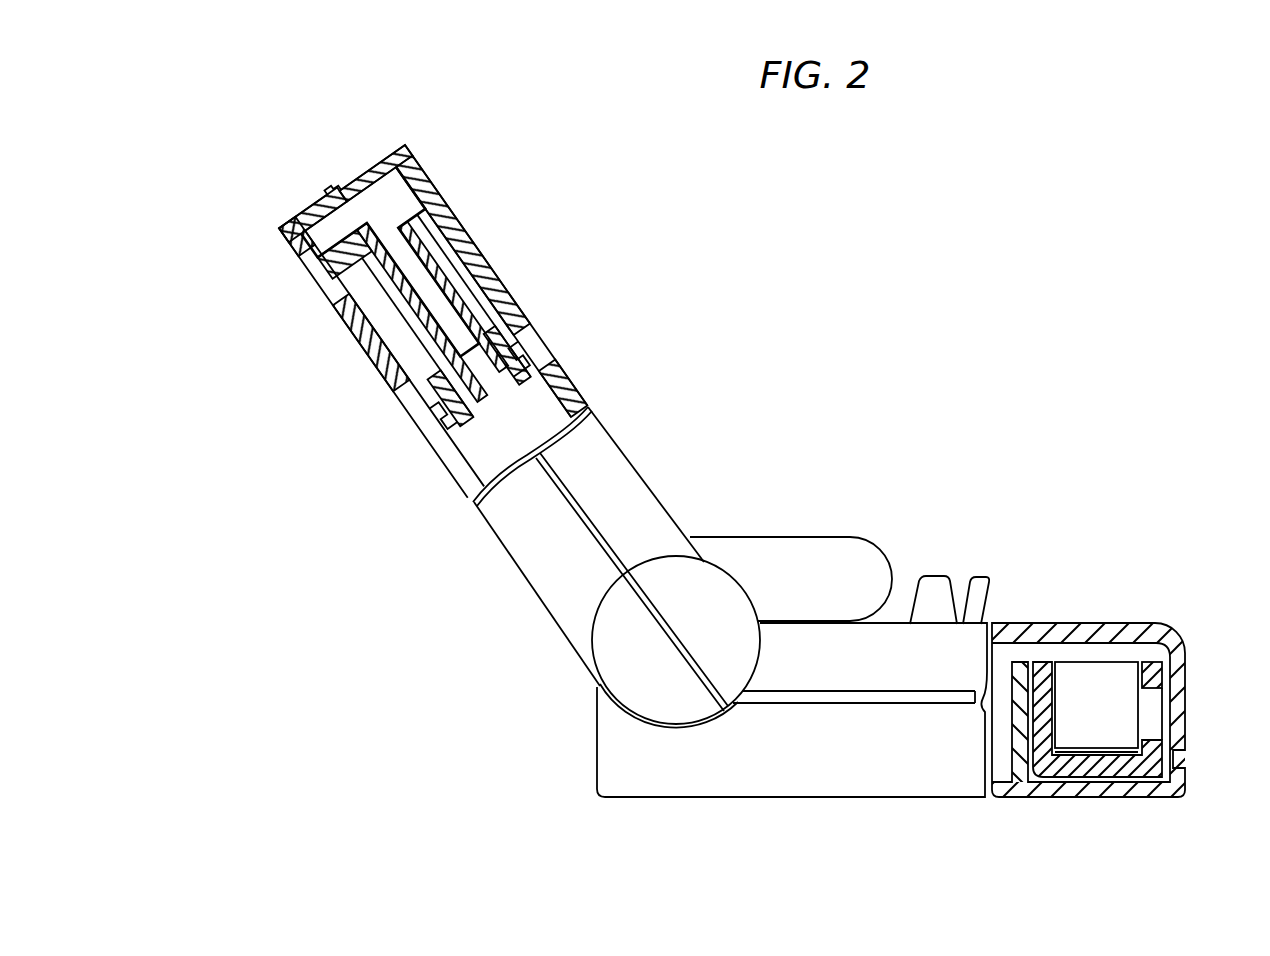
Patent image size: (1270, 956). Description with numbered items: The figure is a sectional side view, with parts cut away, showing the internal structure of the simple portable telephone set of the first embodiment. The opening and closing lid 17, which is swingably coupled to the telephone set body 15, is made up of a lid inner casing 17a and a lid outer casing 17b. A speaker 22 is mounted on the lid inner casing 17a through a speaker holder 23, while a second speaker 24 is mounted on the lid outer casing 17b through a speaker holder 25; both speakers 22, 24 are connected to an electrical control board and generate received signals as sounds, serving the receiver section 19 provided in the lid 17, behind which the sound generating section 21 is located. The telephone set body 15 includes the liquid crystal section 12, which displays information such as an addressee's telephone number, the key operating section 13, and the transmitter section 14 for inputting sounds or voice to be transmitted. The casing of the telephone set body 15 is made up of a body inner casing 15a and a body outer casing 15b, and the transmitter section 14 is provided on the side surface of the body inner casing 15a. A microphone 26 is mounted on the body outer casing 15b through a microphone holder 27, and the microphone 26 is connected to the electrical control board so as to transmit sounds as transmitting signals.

The liquid crystal section 12 is at (811, 552).
The key operating section 13 is at (934, 578).
The transmitter section 14 is at (1180, 713).
The telephone set body 15 is at (853, 778).
The body inner casing 15a is at (1127, 623).
The body outer casing 15b is at (1117, 794).
The opening and closing lid 17 is at (297, 197).
The lid inner casing 17a is at (403, 143).
The lid outer casing 17b is at (280, 230).
The receiver section 19 is at (481, 263).
The sound generating section 21 is at (362, 353).
The speaker 22 is at (436, 242).
The speaker holder 23 is at (547, 350).
The speaker 24 is at (420, 395).
The speaker holder 25 is at (450, 425).
The microphone 26 is at (1083, 680).
The microphone holder 27 is at (1170, 662).